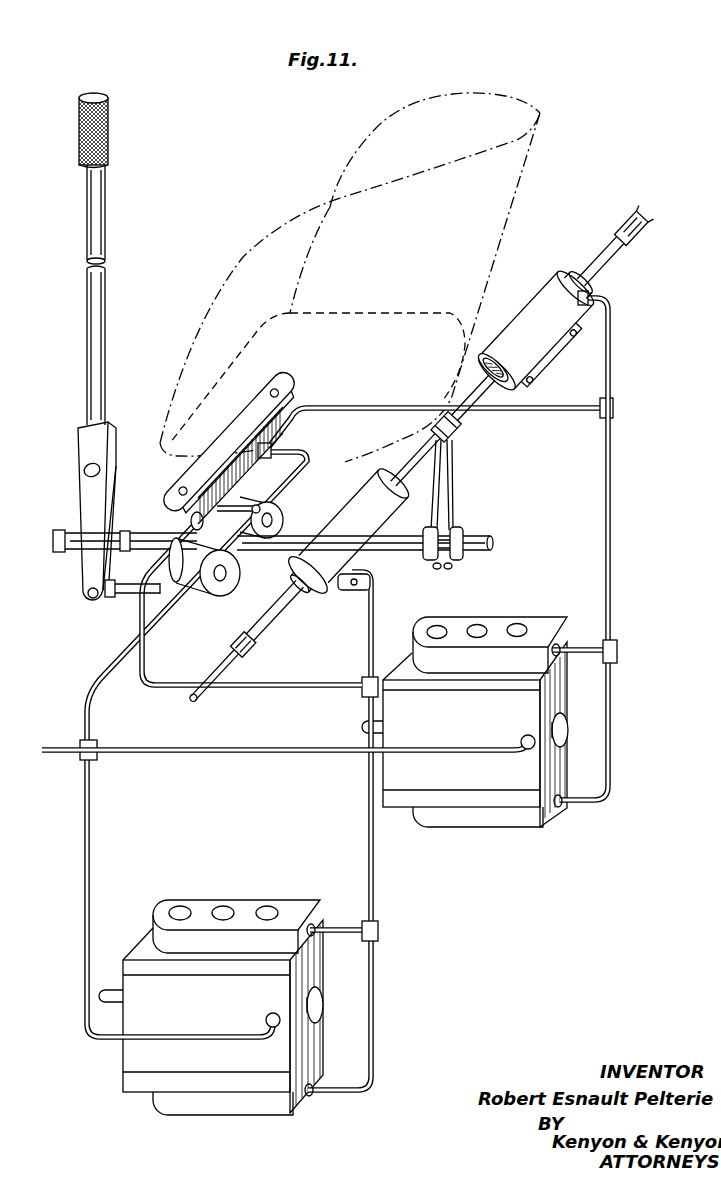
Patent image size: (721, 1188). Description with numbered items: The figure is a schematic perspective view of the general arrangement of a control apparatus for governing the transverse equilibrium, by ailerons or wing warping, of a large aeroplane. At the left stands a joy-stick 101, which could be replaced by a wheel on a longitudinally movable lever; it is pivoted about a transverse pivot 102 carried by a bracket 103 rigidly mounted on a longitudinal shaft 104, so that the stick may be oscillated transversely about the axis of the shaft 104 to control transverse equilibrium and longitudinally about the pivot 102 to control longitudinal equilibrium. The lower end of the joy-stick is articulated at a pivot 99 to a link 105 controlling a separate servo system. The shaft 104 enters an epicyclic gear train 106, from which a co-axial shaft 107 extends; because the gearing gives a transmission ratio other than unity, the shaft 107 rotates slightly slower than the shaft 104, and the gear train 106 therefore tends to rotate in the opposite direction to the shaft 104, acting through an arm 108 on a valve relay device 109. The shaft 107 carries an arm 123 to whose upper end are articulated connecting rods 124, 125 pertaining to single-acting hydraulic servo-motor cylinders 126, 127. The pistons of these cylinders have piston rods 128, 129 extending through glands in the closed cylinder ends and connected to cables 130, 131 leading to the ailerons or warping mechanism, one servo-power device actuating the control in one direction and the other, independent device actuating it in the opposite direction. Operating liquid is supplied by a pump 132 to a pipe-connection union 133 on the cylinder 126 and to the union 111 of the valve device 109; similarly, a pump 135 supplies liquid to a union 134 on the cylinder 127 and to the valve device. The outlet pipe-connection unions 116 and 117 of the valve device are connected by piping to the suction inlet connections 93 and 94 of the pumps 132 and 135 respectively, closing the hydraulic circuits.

The suction inlet connection 93 is at (266, 1025).
The suction inlet connection 94 is at (521, 745).
The pivot 99 is at (87, 596).
The joy-stick 101 is at (110, 212).
The transverse pivot 102 is at (84, 468).
The bracket 103 is at (78, 512).
The longitudinal shaft 104 is at (60, 545).
The link 105 is at (122, 592).
The epicyclic gear train 106 is at (204, 608).
The shaft 107 is at (290, 551).
The arm 108 is at (252, 484).
The valve relay device 109 is at (182, 470).
The union 111 is at (190, 520).
The outlet pipe-connection union 116 is at (267, 560).
The outlet pipe-connection union 117 is at (276, 451).
The arm 123 is at (448, 495).
The connecting rod 124 is at (425, 466).
The connecting rod 125 is at (479, 395).
The hydraulic servo-motor cylinder 126 is at (370, 483).
The hydraulic servo-motor cylinder 127 is at (535, 304).
The piston rod 128 is at (273, 602).
The piston rod 129 is at (600, 256).
The cable 130 is at (198, 694).
The cable 131 is at (648, 207).
The pump 132 is at (237, 937).
The pipe-connection union 133 is at (350, 592).
The union 134 is at (586, 298).
The pump 135 is at (490, 647).